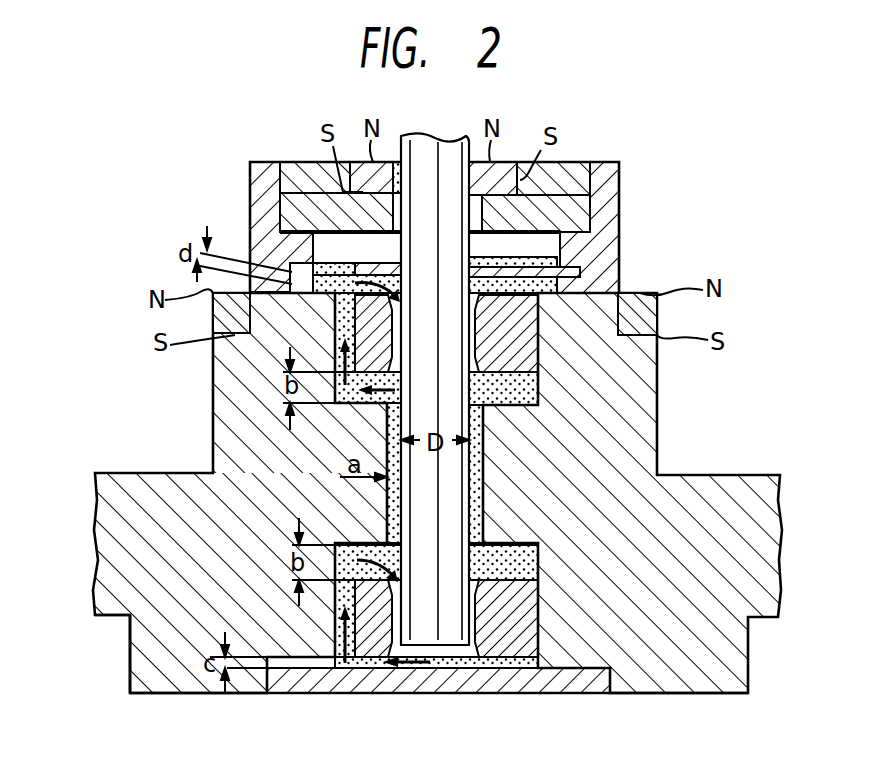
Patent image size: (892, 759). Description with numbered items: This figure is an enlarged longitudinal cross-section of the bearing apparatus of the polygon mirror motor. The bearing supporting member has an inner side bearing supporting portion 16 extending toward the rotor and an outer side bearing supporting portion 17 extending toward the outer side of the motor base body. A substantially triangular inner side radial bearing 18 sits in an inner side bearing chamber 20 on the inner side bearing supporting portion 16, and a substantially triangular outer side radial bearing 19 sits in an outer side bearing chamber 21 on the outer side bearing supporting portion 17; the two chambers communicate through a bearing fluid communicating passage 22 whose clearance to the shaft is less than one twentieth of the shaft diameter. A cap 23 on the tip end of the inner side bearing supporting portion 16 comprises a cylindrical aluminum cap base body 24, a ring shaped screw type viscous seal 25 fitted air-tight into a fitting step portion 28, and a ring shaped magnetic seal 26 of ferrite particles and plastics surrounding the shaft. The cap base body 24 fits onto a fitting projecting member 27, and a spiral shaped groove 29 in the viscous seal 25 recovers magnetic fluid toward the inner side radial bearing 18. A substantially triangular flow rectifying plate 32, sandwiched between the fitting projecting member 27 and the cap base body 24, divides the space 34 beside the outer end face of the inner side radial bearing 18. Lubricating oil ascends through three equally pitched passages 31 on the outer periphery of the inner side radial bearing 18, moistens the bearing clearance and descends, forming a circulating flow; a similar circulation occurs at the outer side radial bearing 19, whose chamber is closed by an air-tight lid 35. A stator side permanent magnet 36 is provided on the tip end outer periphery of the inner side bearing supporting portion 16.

The inner side bearing supporting portion 16 is at (213, 395).
The outer side bearing supporting portion 17 is at (130, 665).
The inner side radial bearing 18 is at (533, 355).
The outer side radial bearing 19 is at (498, 648).
The inner side bearing chamber 20 is at (528, 393).
The outer side bearing chamber 21 is at (518, 567).
The bearing fluid communicating passage 22 is at (478, 470).
The cap 23 is at (632, 155).
The cap base body 24 is at (619, 210).
The screw type viscous seal 25 is at (566, 162).
The magnetic seal 26 is at (500, 175).
The fitting projecting member 27 is at (619, 272).
The fitting step portion 28 is at (290, 185).
The spiral shaped groove 29 is at (386, 216).
The passages 31 is at (345, 325).
The flow rectifying plate 32 is at (583, 263).
The space 34 is at (588, 200).
The lid 35 is at (310, 690).
The stator side permanent magnet 36 is at (213, 318).